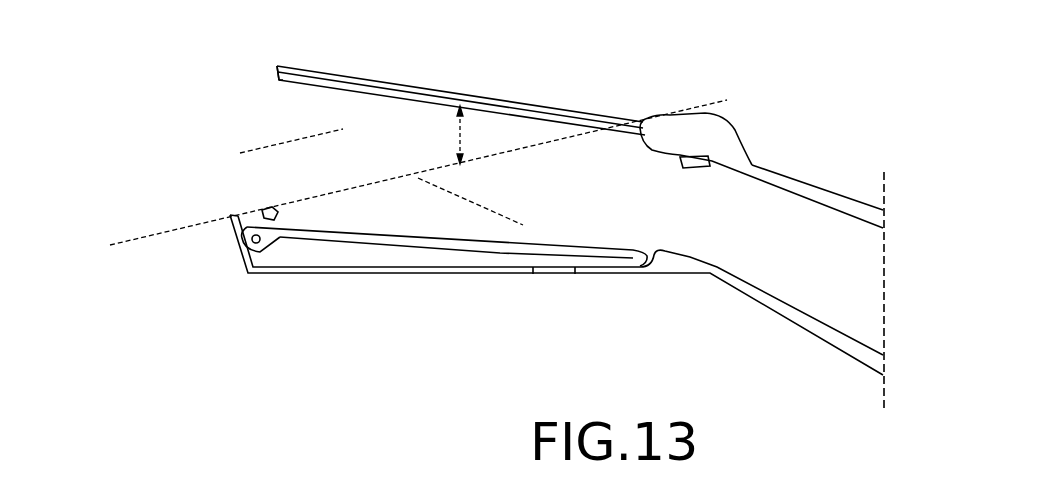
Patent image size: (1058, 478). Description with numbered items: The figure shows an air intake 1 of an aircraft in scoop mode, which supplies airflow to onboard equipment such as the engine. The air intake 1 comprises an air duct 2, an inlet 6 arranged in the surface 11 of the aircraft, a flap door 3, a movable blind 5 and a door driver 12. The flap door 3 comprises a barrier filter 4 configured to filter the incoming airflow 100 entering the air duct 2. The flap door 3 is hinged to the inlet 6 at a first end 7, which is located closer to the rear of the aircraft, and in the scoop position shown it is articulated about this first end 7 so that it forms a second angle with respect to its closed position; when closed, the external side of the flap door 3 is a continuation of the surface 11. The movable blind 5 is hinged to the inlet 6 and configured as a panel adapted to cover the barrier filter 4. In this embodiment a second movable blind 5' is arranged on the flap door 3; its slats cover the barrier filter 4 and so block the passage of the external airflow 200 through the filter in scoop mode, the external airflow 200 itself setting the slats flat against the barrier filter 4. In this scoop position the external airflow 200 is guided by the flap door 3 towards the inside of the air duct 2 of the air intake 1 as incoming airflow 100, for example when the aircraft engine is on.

The air intake 1 is at (855, 84).
The air duct 2 is at (863, 257).
The flap door 3 is at (541, 68).
The barrier filter 4 is at (362, 78).
The movable blind 5 is at (445, 233).
The second movable blind 5' is at (241, 69).
The inlet 6 is at (262, 176).
The first end 7 is at (690, 100).
The surface 11 is at (133, 208).
The door driver 12 is at (690, 169).
The incoming airflow 100 is at (487, 198).
The external airflow 200 is at (311, 123).